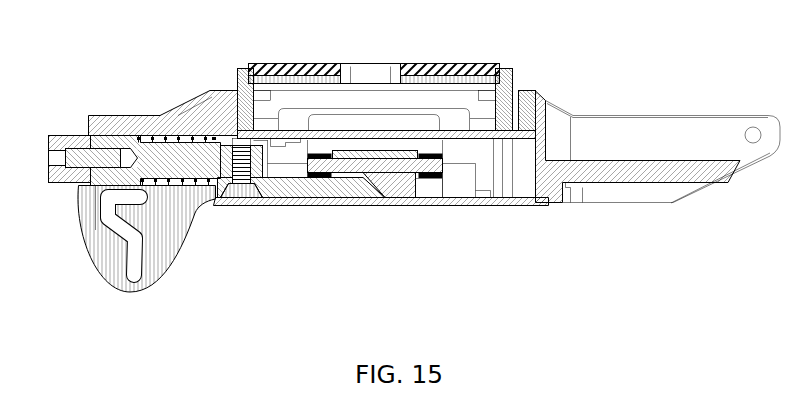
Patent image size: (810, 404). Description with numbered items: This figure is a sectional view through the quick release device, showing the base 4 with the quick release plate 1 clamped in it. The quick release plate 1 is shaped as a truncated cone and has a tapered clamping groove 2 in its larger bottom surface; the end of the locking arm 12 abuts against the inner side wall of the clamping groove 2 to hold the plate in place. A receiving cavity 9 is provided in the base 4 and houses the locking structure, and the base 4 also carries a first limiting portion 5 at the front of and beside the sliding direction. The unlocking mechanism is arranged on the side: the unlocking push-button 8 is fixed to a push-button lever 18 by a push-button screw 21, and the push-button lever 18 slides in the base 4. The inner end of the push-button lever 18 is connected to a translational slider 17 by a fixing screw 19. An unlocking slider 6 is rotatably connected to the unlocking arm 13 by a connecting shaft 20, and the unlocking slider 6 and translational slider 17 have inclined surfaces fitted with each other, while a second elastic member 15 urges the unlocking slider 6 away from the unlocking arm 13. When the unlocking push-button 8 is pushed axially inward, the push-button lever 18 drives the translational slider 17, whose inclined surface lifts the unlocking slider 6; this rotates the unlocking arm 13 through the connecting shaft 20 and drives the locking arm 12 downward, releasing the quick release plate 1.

The quick release plate 1 is at (251, 80).
The clamping groove 2 is at (307, 102).
The base 4 is at (146, 122).
The first limiting portion 5 is at (532, 95).
The unlocking slider 6 is at (355, 175).
The unlocking push-button 8 is at (70, 177).
The receiving cavity 9 is at (455, 153).
The locking arm 12 is at (404, 123).
The unlocking arm 13 is at (430, 173).
The second elastic member 15 is at (202, 212).
The translational slider 17 is at (298, 188).
The push-button lever 18 is at (162, 163).
The fixing screw 19 is at (243, 175).
The connecting shaft 20 is at (375, 167).
The push-button screw 21 is at (63, 133).